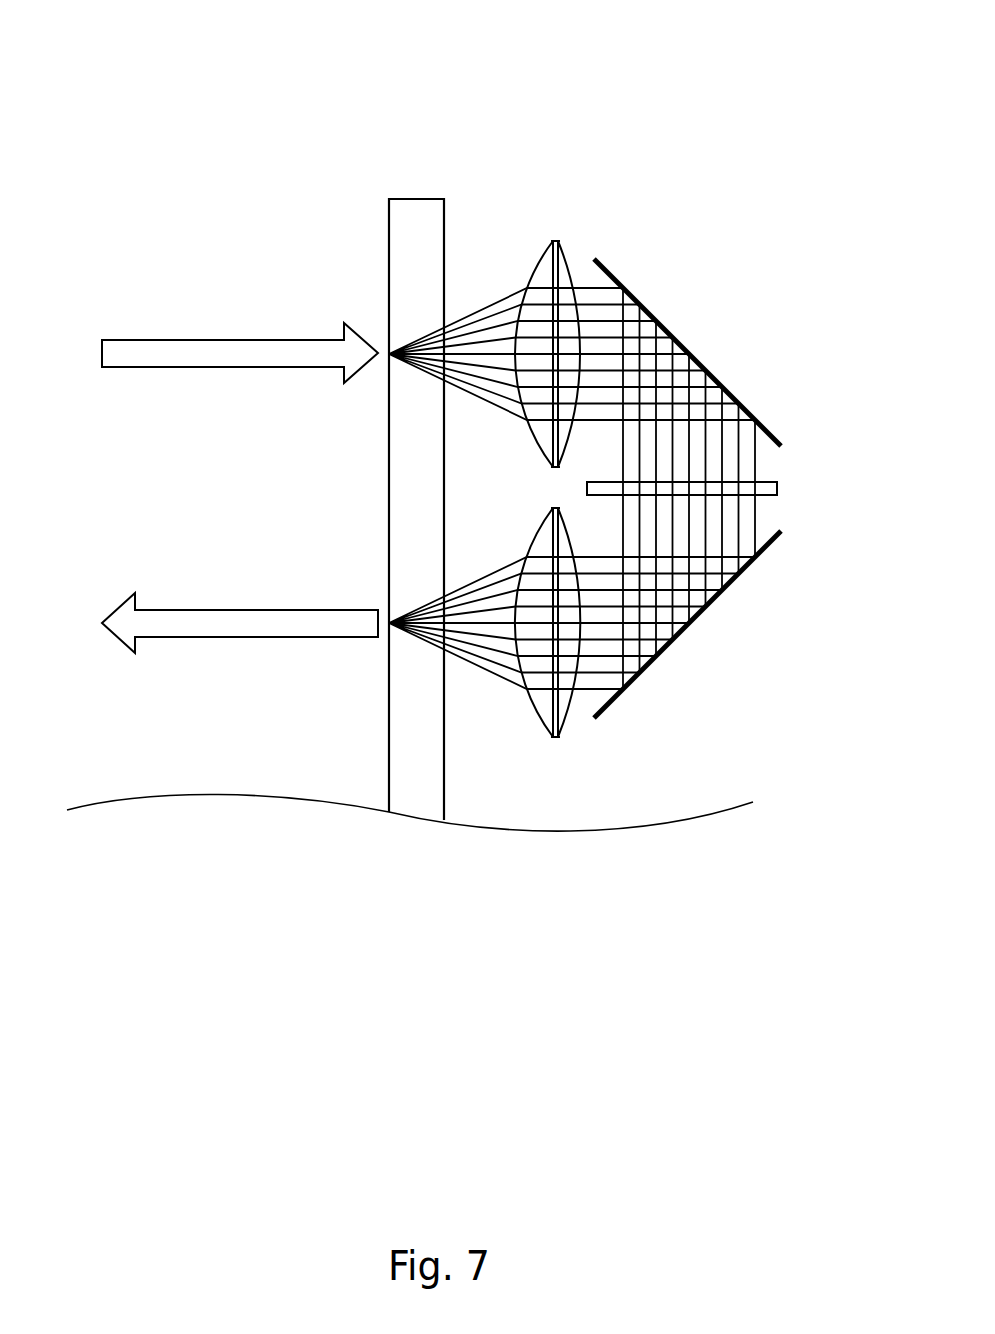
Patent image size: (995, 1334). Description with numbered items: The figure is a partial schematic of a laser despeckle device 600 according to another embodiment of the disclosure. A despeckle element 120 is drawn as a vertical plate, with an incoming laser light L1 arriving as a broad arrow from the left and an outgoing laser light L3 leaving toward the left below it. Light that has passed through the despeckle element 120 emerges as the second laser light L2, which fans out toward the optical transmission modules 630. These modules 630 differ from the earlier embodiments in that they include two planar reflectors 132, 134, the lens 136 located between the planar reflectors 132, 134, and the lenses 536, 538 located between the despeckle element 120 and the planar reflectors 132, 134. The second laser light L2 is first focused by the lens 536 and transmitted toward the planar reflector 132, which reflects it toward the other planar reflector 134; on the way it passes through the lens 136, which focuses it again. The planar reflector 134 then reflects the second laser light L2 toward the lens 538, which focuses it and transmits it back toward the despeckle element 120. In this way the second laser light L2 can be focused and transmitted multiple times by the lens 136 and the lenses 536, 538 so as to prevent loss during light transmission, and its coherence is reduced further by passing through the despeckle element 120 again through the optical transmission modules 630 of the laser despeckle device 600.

The laser despeckle device 600 is at (57, 36).
The despeckle element 120 is at (417, 205).
The lens 536 is at (543, 262).
The lens 538 is at (543, 705).
The optical transmission modules 630 is at (737, 401).
The planar reflector 132 is at (770, 430).
The planar reflector 134 is at (768, 550).
The lens 136 is at (777, 485).
The incident light L1 is at (171, 346).
The second laser light L2 is at (490, 300).
The output light L3 is at (193, 617).